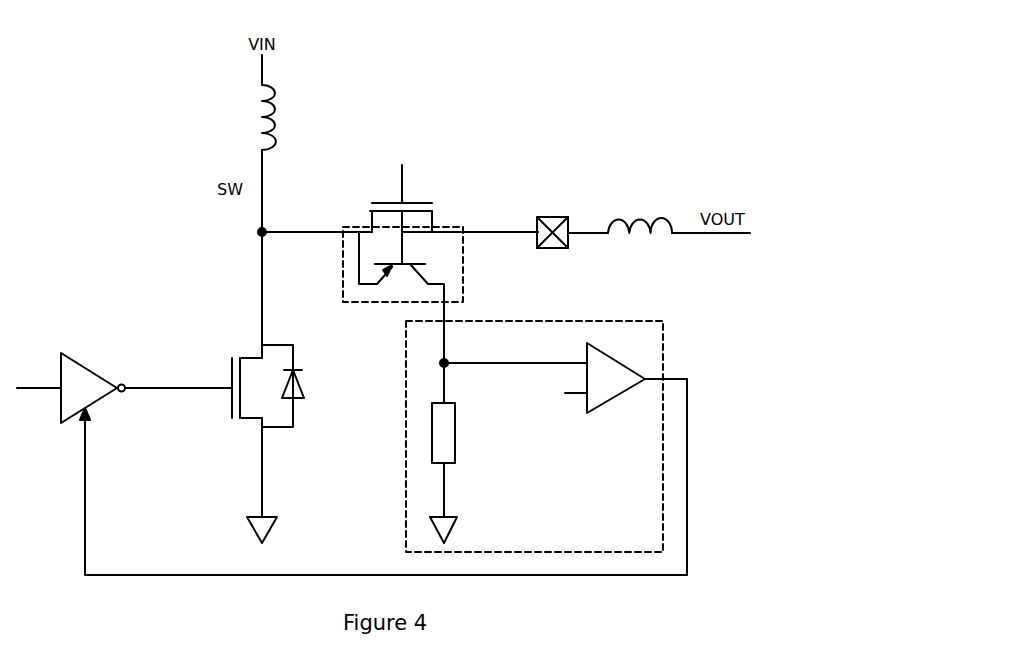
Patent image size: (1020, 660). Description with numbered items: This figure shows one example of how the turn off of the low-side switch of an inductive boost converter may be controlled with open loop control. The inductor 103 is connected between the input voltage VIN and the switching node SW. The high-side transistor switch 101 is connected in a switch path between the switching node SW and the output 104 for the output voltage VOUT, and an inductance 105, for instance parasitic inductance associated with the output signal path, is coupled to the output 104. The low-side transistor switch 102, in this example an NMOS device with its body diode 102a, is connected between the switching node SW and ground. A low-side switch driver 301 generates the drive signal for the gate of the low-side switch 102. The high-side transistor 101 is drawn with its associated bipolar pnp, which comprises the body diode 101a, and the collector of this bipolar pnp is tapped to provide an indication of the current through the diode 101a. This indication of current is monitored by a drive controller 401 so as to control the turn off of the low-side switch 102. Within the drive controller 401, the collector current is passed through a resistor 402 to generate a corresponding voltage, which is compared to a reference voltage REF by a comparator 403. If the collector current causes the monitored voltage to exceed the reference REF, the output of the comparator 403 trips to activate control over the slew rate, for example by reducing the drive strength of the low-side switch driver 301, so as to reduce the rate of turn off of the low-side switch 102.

The high-side transistor switch 101 is at (430, 203).
The body diode 101a is at (465, 270).
The low-side transistor switch 102 is at (227, 408).
The body diode of low-side switch 102a is at (303, 397).
The inductor 103 is at (262, 110).
The output 104 is at (545, 217).
The inductance 105 is at (642, 218).
The low-side switch driver 301 is at (78, 358).
The drive controller 401 is at (534, 436).
The resistor 402 is at (455, 452).
The comparator 403 is at (603, 408).